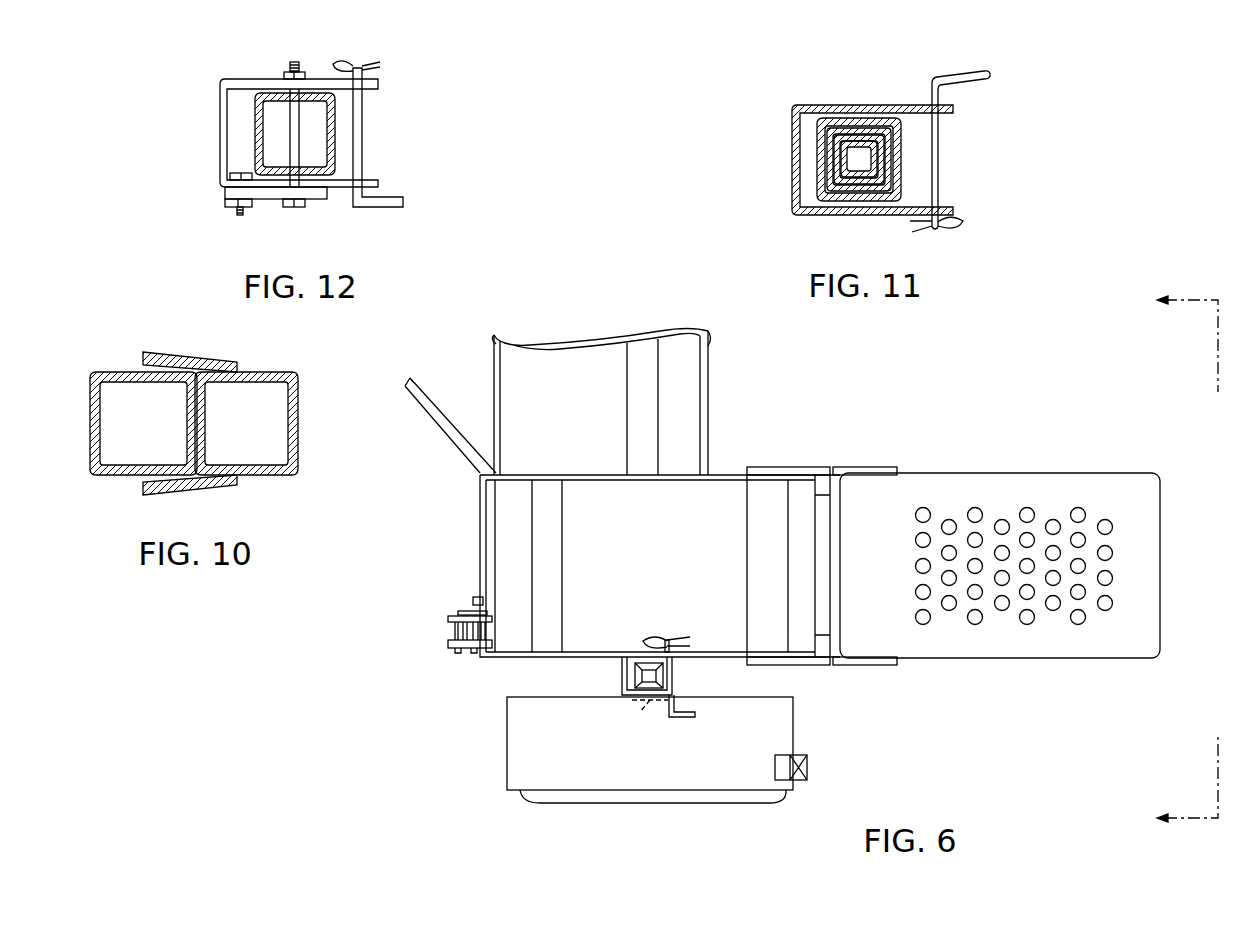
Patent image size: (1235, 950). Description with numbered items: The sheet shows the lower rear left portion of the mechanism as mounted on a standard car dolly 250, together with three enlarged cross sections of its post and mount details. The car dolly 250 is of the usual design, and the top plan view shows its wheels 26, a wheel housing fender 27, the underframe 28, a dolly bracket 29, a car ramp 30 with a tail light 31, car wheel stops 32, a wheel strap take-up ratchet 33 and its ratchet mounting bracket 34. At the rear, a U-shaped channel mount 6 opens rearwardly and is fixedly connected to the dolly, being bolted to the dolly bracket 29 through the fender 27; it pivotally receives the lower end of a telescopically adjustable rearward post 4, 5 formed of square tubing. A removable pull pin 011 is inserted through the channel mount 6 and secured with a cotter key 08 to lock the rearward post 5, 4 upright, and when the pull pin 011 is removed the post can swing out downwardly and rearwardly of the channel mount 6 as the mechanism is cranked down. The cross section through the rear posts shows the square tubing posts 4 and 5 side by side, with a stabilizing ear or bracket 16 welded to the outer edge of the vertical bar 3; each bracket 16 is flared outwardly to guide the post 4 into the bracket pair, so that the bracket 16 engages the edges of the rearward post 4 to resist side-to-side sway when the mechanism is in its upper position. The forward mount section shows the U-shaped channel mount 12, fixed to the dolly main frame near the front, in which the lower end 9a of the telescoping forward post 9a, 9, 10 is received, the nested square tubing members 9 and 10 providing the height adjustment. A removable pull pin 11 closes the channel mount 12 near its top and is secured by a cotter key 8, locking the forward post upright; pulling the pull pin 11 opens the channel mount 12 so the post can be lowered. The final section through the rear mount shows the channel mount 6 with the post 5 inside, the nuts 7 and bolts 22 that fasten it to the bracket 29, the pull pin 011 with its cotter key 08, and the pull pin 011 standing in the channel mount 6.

In FIG. 10, the vertical bar 3 is at (298, 446).
In FIG. 10, the rearward post 4 is at (90, 415).
In FIG. 12, the rearward post 5 is at (336, 135).
In FIG. 6, the rearward post 5 is at (665, 675).
In FIG. 12, the channel mount 6 is at (220, 143).
In FIG. 6, the channel mount 6 is at (622, 672).
In FIG. 12, the nut 7 is at (240, 215).
In FIG. 12, the cotter key 8 is at (338, 62).
In FIG. 11, the cotter key 8 is at (965, 222).
In FIG. 6, the cotter key 8 is at (1180, 560).
In FIG. 6, the cotter key 08 is at (650, 640).
In FIG. 11, the forward post member 9 is at (852, 190).
In FIG. 11, the forward post lower end 9a is at (817, 148).
In FIG. 11, the forward post member 10 is at (855, 140).
In FIG. 11, the pull pin 11 is at (992, 72).
In FIG. 11, the channel mount 12 is at (806, 105).
In FIG. 10, the stabilizing bracket 16 is at (213, 362).
In FIG. 12, the bolt 22 is at (292, 66).
In FIG. 6, the wheels 26 is at (728, 800).
In FIG. 6, the fender 27 is at (507, 750).
In FIG. 6, the underframe 28 is at (710, 405).
In FIG. 12, the bracket 29 is at (272, 200).
In FIG. 6, the bracket 29 is at (650, 721).
In FIG. 6, the car ramp 30 is at (1082, 658).
In FIG. 6, the tail light 31 is at (808, 770).
In FIG. 6, the car wheel stop 32 is at (556, 550).
In FIG. 6, the wheel strap take-up ratchet 33 is at (455, 615).
In FIG. 6, the ratchet mounting bracket 34 is at (480, 508).
In FIG. 12, the pull pin 011 is at (403, 207).
In FIG. 6, the pull pin 011 is at (695, 717).
In FIG. 6, the car dolly 250 is at (878, 685).